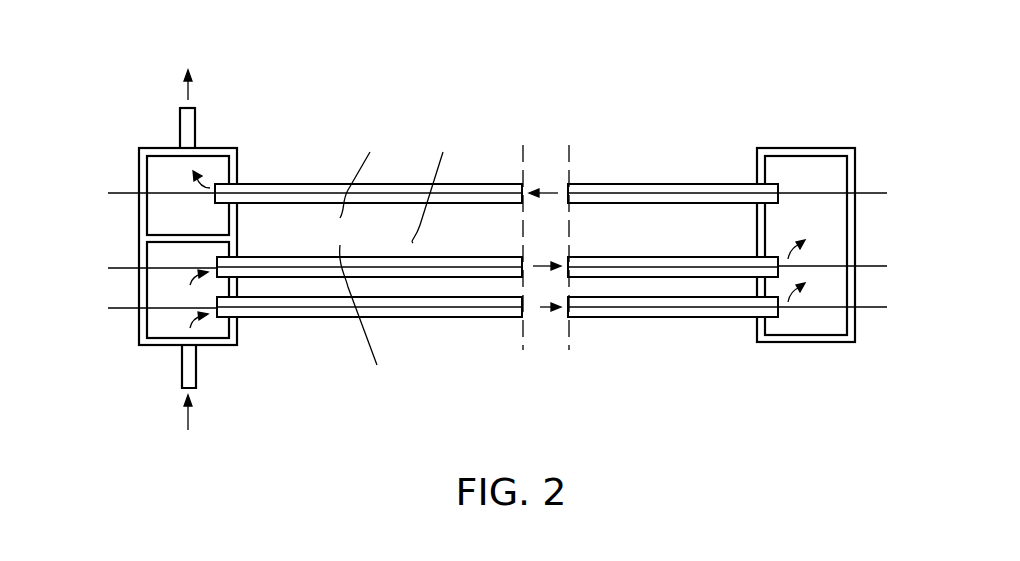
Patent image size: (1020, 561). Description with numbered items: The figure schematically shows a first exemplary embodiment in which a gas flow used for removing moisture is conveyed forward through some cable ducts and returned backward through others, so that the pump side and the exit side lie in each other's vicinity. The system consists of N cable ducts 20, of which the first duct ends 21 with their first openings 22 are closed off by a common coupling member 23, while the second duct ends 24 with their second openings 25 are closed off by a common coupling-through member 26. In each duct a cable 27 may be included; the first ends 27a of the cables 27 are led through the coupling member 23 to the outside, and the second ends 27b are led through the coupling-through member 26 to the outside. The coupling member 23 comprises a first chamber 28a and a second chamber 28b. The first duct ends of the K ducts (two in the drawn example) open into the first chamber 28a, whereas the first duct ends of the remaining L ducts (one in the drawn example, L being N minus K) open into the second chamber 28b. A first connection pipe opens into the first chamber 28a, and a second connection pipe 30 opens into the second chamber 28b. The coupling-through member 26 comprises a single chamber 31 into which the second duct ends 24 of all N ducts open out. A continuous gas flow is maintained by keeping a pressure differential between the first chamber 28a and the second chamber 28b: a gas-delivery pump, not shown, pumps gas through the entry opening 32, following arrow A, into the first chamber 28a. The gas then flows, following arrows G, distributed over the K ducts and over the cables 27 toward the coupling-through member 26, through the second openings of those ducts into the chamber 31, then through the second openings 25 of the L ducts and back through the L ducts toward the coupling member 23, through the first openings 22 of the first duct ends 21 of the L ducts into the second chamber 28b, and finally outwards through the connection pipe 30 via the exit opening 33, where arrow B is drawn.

The cable ducts 20 is at (490, 182).
The first duct ends 21 is at (302, 294).
The first openings 22 is at (216, 303).
The coupling member 23 is at (139, 327).
The second duct ends 24 is at (695, 317).
The second openings 25 is at (790, 262).
The coupling-through member 26 is at (773, 343).
The cable 27 is at (603, 190).
The first ends of the cables 27a is at (117, 192).
The second ends of the cables 27b is at (826, 190).
The first chamber 28a is at (163, 335).
The second chamber 28b is at (157, 172).
The second connection pipe 30 is at (180, 118).
The chamber 31 is at (788, 163).
The entry opening 32 is at (185, 388).
The exit opening 33 is at (195, 110).
The arrow A is at (188, 426).
The arrow B is at (188, 70).
The arrows G is at (212, 190).
The L ducts L is at (358, 172).
The N cable ducts N is at (431, 184).
The K ducts K is at (362, 317).